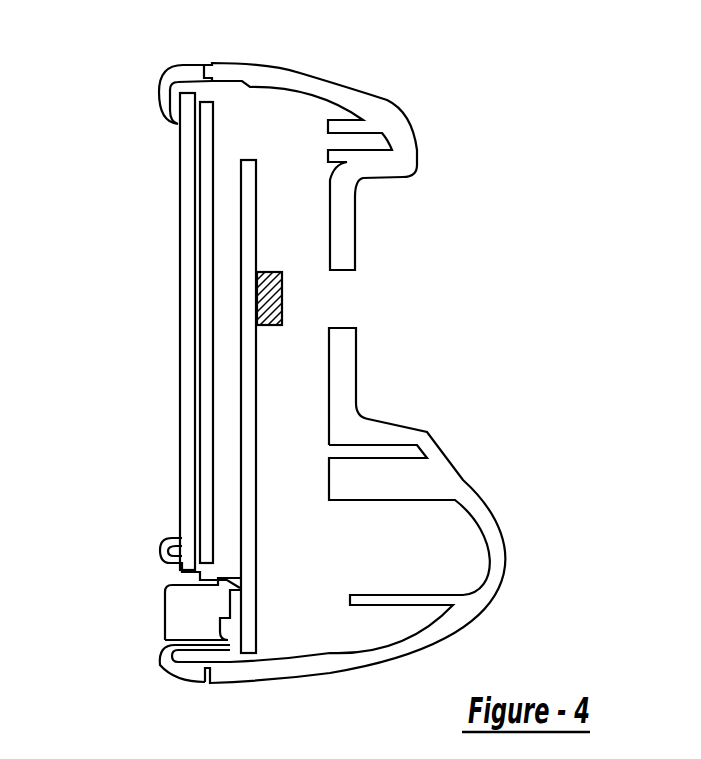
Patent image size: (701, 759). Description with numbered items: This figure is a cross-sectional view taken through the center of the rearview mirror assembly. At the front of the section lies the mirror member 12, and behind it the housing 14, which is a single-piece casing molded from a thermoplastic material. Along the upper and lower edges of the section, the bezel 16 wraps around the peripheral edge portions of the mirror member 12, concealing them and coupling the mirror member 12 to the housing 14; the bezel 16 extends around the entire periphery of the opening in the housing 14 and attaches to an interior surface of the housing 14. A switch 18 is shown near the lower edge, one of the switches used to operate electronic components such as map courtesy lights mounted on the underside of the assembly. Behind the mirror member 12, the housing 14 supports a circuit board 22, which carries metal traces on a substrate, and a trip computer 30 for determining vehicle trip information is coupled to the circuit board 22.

The mirror member 12 is at (178, 298).
The housing 14 is at (427, 432).
The bezel 16 is at (158, 97).
The switches 18 is at (162, 612).
The circuit board 22 is at (257, 200).
The trip computer 30 is at (282, 300).